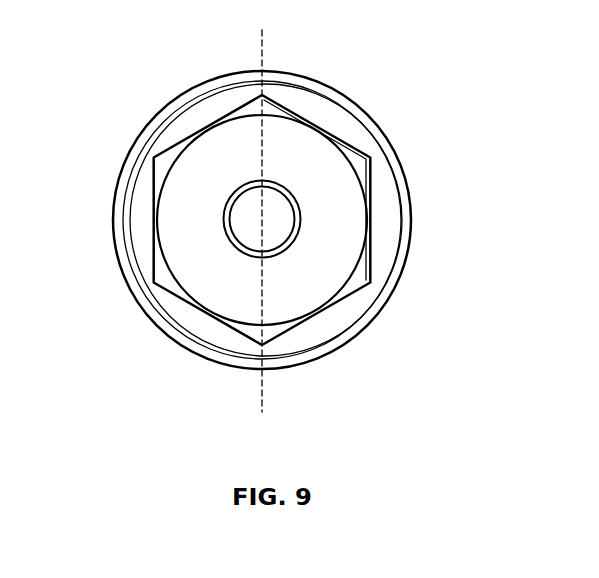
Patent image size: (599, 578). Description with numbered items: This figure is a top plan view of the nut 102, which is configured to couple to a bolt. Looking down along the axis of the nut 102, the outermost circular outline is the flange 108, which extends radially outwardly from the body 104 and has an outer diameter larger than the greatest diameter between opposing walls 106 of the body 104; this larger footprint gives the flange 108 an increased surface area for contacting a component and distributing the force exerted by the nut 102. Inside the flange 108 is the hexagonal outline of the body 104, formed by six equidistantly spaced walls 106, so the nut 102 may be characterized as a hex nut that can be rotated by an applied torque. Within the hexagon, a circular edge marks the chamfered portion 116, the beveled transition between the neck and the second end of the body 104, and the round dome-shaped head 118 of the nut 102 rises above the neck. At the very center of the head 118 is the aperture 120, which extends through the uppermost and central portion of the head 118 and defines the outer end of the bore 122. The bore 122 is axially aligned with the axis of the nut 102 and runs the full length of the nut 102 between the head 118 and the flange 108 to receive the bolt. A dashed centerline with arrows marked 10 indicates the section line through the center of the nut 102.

The section line 10- 10 is at (262, 30).
The nut 102 is at (148, 73).
The body 104 is at (150, 283).
The walls 106 is at (377, 268).
The flange 108 is at (387, 205).
The chamfered portion 116 is at (358, 163).
The head 118 is at (295, 167).
The aperture 120 is at (225, 230).
The bore 122 is at (252, 246).